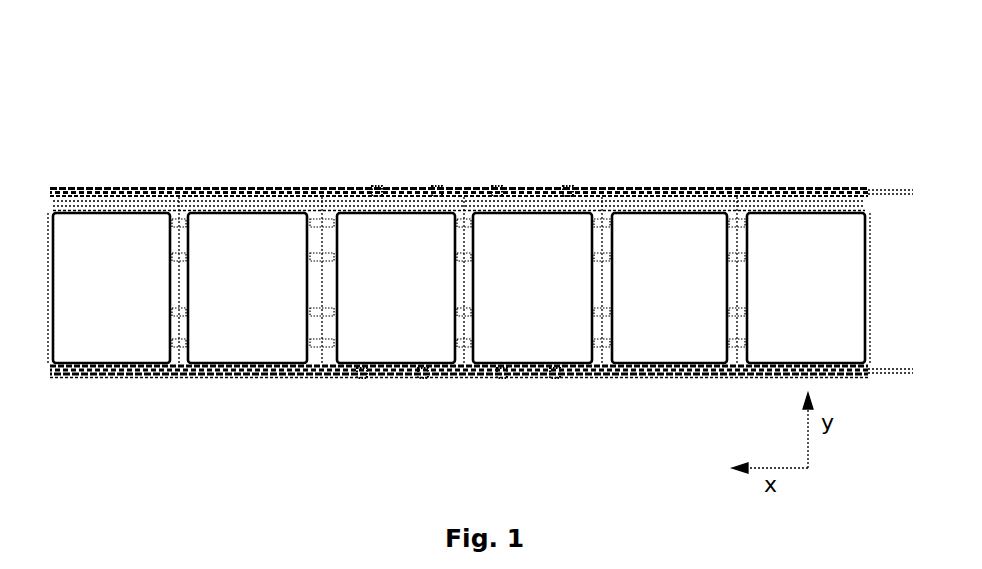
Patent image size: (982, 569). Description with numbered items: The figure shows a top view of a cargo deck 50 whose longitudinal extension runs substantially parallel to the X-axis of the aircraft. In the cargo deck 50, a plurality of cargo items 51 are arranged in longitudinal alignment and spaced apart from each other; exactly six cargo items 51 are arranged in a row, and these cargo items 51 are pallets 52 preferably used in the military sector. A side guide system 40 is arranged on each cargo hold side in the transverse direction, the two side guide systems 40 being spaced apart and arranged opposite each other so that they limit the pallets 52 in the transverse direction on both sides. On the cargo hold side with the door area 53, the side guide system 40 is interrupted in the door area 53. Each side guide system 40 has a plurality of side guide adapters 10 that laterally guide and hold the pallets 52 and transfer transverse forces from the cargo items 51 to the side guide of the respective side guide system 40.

The cargo deck 50 is at (150, 126).
The door area 53 is at (250, 152).
The pallet 52 is at (459, 288).
The cargo item 51 is at (790, 223).
The side guide system 40 is at (671, 187).
The side guide adapter 10 is at (568, 187).